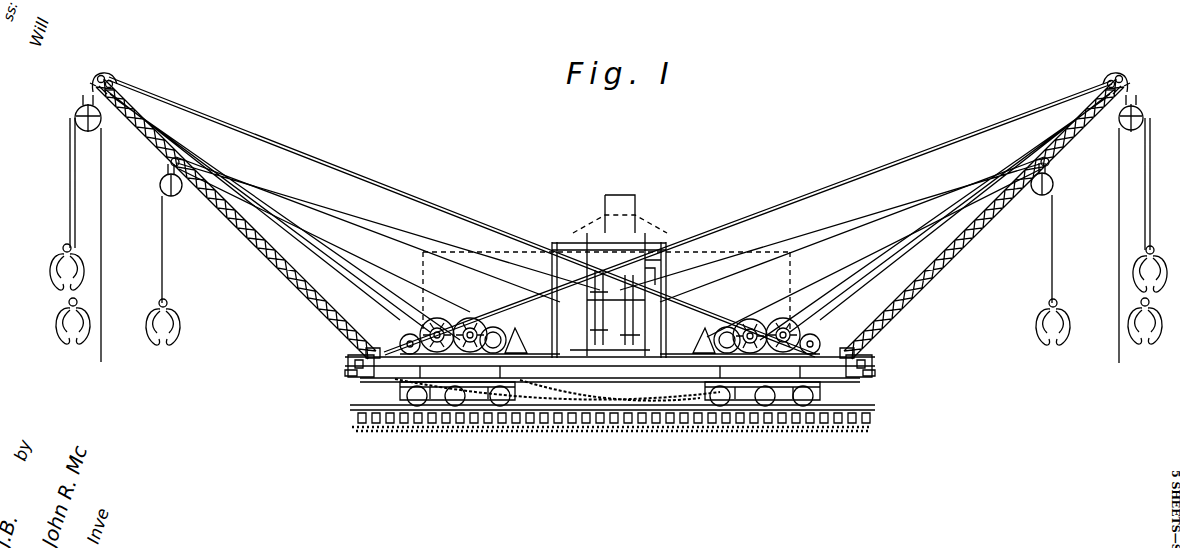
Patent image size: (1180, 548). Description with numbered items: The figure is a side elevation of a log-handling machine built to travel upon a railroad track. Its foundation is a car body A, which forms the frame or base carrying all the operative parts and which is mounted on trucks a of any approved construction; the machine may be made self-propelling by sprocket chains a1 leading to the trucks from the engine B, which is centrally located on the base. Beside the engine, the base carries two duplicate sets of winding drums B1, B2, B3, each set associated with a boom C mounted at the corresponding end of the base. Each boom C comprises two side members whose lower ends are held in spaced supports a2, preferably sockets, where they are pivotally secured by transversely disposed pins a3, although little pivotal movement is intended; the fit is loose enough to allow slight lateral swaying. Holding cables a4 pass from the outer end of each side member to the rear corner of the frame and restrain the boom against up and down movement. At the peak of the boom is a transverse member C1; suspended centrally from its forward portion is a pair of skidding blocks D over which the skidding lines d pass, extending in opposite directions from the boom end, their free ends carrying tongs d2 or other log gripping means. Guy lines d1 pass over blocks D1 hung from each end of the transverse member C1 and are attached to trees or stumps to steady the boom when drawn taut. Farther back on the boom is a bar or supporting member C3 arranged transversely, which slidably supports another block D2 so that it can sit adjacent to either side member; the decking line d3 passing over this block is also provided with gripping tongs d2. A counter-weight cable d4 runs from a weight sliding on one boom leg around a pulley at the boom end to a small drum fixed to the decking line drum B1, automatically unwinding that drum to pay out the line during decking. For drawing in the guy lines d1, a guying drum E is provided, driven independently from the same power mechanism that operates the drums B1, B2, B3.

The car body A is at (665, 383).
The trucks a is at (462, 411).
The sprocket chains a1 is at (600, 380).
The spaced supports a2 is at (348, 357).
The transversely disposed pins a3 is at (610, 340).
The holding cables a4 is at (296, 146).
The engine B is at (606, 276).
The winding drum B1 is at (424, 332).
The winding drum B2 is at (472, 317).
The winding drum B3 is at (500, 326).
The boom C is at (258, 268).
The transverse member C1 is at (98, 76).
The bar or supporting member C3 is at (181, 162).
The skidding blocks D is at (75, 120).
The blocks D1 is at (112, 87).
The block D2 is at (160, 186).
The skidding lines d is at (68, 207).
The guy lines d1 is at (103, 212).
The tongs d2 is at (58, 322).
The decking line d3 is at (162, 268).
The counter-weight cable d4 is at (385, 282).
The guying drum E is at (350, 372).